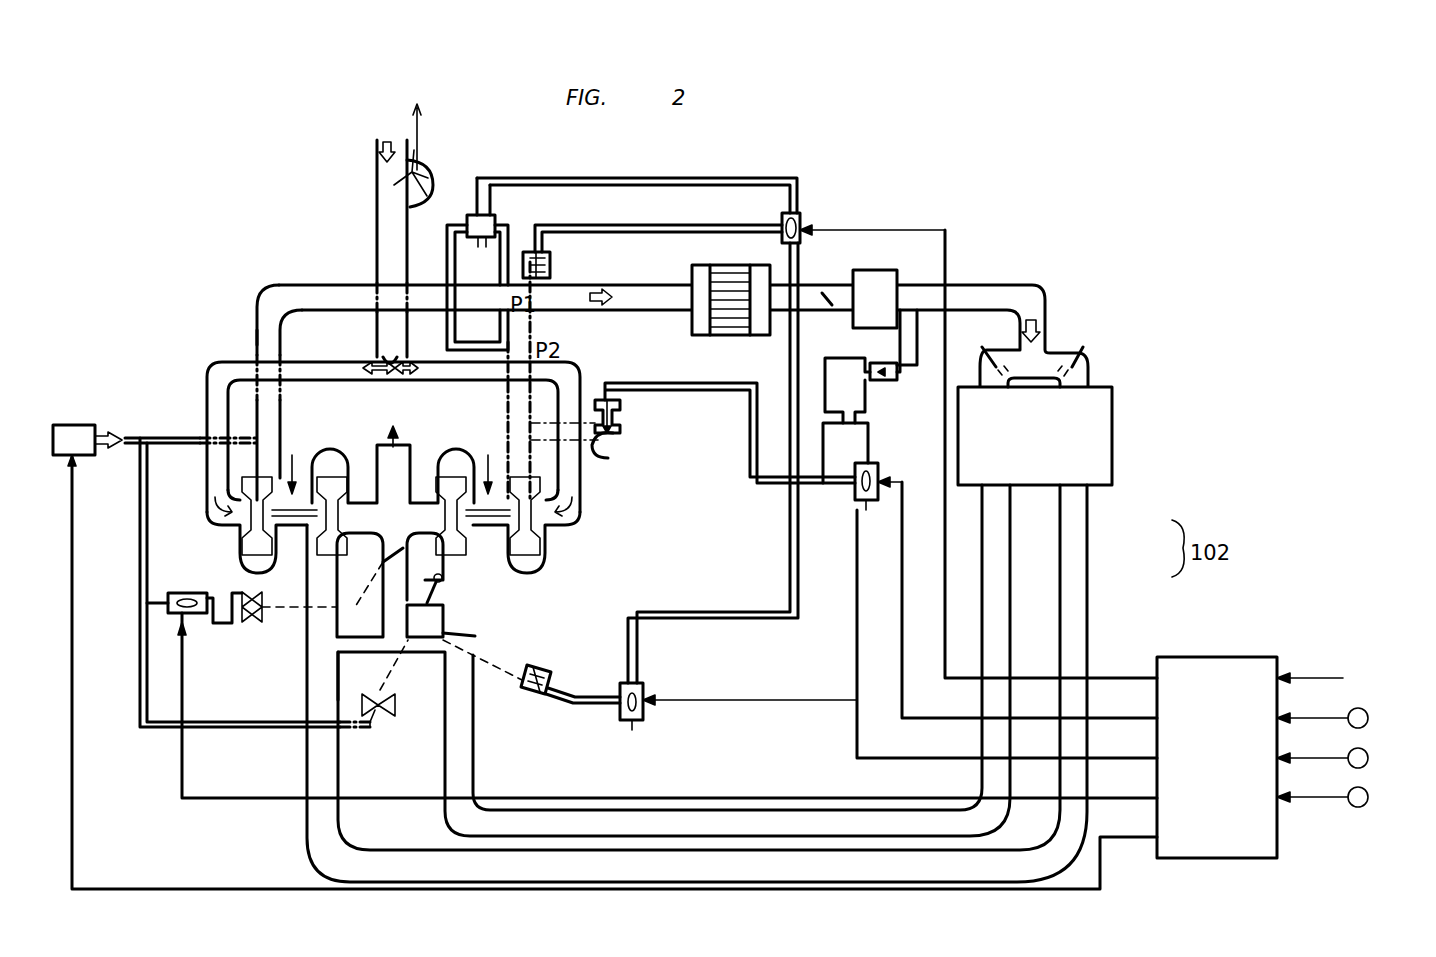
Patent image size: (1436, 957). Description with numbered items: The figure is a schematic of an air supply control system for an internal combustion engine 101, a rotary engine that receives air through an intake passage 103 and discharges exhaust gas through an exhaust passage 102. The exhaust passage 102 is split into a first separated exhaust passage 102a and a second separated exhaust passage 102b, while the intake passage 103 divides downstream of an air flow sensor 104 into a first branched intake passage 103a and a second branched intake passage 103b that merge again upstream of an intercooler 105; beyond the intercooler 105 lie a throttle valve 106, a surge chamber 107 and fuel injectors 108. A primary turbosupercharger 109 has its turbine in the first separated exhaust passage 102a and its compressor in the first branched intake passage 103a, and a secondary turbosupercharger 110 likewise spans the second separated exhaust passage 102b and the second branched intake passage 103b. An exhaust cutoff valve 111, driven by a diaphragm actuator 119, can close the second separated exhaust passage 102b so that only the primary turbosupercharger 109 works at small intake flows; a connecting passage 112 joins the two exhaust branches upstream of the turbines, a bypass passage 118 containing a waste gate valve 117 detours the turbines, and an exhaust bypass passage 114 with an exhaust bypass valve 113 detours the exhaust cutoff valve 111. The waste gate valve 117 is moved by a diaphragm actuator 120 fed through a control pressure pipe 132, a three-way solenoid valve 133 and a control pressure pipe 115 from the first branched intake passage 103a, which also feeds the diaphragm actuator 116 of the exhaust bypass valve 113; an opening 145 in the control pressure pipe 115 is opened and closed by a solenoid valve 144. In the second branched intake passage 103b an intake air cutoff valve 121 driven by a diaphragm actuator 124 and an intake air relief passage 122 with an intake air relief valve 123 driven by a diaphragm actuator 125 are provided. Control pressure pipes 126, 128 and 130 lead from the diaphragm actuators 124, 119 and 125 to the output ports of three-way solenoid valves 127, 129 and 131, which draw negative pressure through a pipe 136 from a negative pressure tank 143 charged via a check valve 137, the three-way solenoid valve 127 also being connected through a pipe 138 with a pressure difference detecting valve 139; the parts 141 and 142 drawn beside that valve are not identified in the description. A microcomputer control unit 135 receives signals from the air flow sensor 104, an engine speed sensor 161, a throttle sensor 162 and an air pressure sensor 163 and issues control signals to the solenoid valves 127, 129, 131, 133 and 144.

The internal combustion engine 101 is at (1112, 402).
The exhaust passage 102 is at (416, 458).
The first separated exhaust passage 102a is at (312, 680).
The second separated exhaust passage 102b is at (473, 746).
The intake passage 103 is at (377, 238).
The first branched intake passage 103a is at (257, 338).
The second branched intake passage 103b is at (540, 325).
The air flow sensor 104 is at (428, 170).
The intercooler 105 is at (732, 330).
The throttle valve 106 is at (828, 312).
The surge chamber 107 is at (870, 270).
The fuel injectors 108 is at (990, 347).
The primary turbosupercharger 109 is at (303, 457).
The secondary turbosupercharger 110 is at (490, 457).
The exhaust cutoff valve 111 is at (475, 636).
The connecting passage 112 is at (410, 650).
The exhaust bypass valve 113 is at (458, 615).
The exhaust bypass passage 114 is at (447, 582).
The control pressure pipe 115 is at (140, 480).
The diaphragm actuator 116 is at (370, 694).
The waste gate valve 117 is at (395, 550).
The bypass passage 118 is at (360, 585).
The diaphragm actuator 119 is at (545, 694).
The diaphragm actuator 120 is at (255, 625).
The intake air cutoff valve 121 is at (510, 325).
The intake air relief passage 122 is at (608, 458).
The intake air relief valve 123 is at (618, 440).
The diaphragm actuator 124 is at (550, 256).
The diaphragm actuator 125 is at (622, 410).
The control pressure pipe 126 is at (680, 218).
The three-way solenoid valve 127 is at (782, 220).
The control pressure pipe 128 is at (596, 696).
The three-way solenoid valve 129 is at (645, 690).
The control pressure pipe 130 is at (760, 485).
The three-way solenoid valve 131 is at (878, 466).
The control pressure pipe 132 is at (212, 630).
The three-way solenoid valve 133 is at (187, 593).
The control unit 135 is at (1225, 657).
The pipe 136 is at (790, 398).
The check valve 137 is at (905, 355).
The pipe 138 is at (672, 168).
The pressure difference detecting valve 139 is at (467, 220).
The lead 141 is at (497, 218).
The chamber 142 is at (447, 270).
The negative pressure tank 143 is at (865, 404).
The solenoid valve 144 is at (72, 424).
The opening 145 is at (130, 430).
The engine speed sensor 161 is at (1367, 713).
The throttle sensor 162 is at (1367, 753).
The air pressure sensor 163 is at (1367, 793).